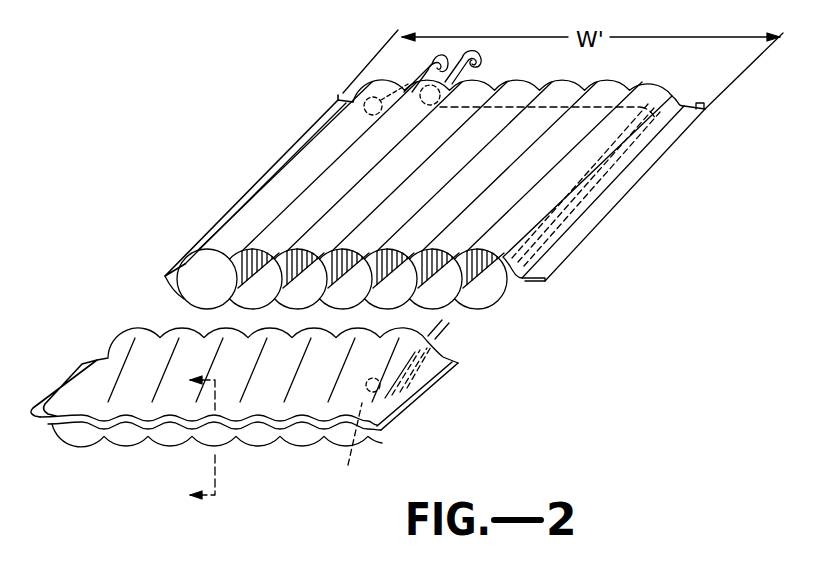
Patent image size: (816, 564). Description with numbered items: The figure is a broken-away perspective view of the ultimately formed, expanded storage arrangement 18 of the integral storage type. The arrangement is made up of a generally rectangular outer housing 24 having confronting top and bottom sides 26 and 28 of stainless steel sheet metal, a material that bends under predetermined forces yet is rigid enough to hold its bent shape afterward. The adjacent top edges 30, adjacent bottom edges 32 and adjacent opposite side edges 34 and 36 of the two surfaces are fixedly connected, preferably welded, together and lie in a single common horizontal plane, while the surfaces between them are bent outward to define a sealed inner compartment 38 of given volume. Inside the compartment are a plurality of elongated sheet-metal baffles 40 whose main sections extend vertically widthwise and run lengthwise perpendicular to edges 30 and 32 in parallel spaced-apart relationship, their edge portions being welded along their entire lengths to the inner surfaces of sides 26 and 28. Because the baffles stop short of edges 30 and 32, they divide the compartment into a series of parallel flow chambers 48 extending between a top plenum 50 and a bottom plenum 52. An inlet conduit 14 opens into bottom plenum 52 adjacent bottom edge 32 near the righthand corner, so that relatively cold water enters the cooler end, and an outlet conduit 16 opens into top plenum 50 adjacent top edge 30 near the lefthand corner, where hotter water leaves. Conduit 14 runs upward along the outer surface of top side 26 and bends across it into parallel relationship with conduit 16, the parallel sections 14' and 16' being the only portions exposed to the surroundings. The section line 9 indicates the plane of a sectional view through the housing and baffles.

The section line 9- 9 is at (193, 437).
The inlet conduit 14 is at (500, 60).
The parallel section of inlet conduit 14' is at (499, 71).
The outlet conduit 16 is at (400, 57).
The exposed section of outlet conduit 16' is at (392, 71).
The storage arrangement 18 is at (273, 136).
The outer housing 24 is at (276, 190).
The top side 26 is at (250, 222).
The bottom side 28 is at (478, 311).
The top edges 30 is at (704, 103).
The bottom edges 32 is at (140, 425).
The side edge 34 is at (566, 253).
The side edge 36 is at (172, 272).
The inner compartment 38 is at (352, 305).
The baffles 40 is at (243, 272).
The flow chambers 48 is at (310, 296).
The top plenum 50 is at (612, 82).
The bottom plenum 52 is at (348, 463).